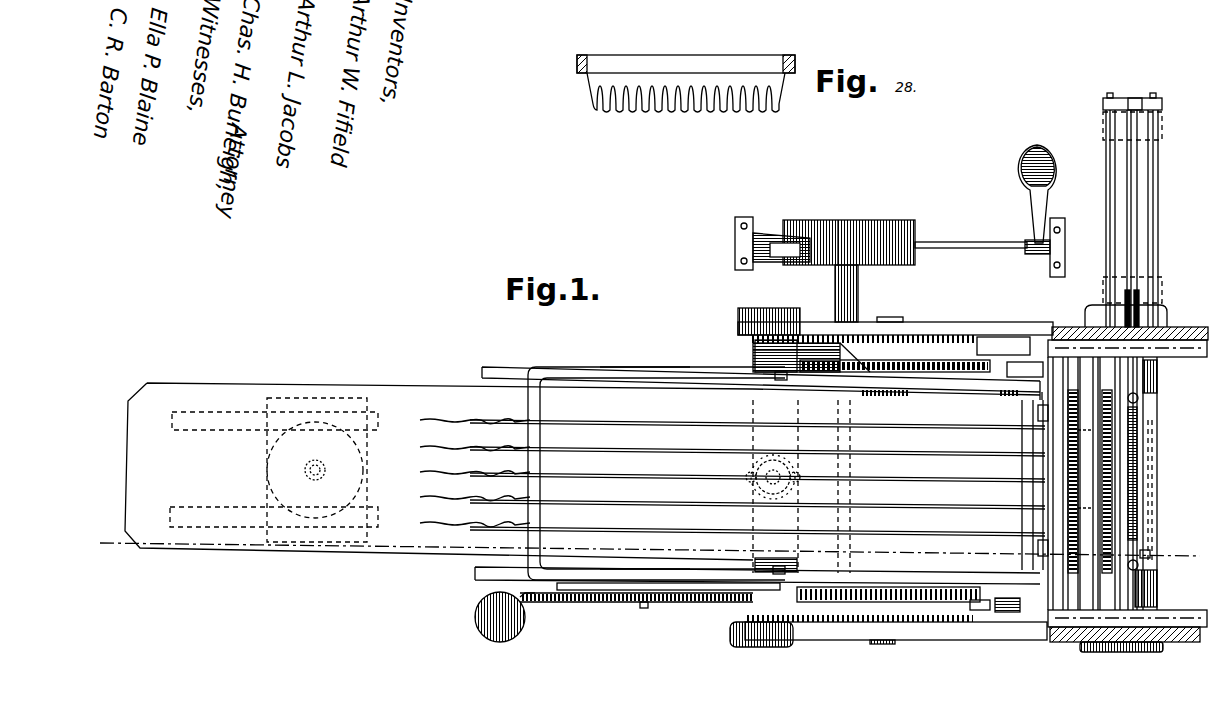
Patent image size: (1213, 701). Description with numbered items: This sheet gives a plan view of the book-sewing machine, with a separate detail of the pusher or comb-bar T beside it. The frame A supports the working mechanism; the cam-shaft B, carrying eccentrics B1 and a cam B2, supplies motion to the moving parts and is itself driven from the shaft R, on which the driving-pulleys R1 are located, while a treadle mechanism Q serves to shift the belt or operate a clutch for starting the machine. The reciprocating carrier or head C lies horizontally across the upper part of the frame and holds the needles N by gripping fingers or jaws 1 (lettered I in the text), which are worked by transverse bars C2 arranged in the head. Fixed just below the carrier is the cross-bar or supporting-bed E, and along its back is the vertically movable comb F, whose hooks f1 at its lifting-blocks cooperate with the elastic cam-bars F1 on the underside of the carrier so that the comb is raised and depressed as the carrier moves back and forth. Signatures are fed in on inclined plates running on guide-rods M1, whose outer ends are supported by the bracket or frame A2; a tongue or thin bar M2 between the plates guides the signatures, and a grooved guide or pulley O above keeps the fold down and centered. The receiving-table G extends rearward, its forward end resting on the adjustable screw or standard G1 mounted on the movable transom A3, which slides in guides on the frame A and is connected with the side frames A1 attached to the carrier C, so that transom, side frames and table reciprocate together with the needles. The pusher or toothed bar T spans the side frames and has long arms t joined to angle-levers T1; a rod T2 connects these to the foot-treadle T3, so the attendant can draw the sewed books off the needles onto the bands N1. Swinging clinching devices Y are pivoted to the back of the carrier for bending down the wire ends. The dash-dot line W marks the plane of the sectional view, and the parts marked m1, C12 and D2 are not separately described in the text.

In FIG. 1, the frame A is at (971, 483).
In FIG. 1, the side frames A1 is at (758, 467).
In FIG. 1, the bracket or frame A2 is at (1126, 201).
In FIG. 1, the movable transom A3 is at (752, 358).
In FIG. 1, the cam-shaft B is at (878, 499).
In FIG. 1, the eccentrics B1 is at (813, 357).
In FIG. 1, the cam B2 is at (888, 593).
In FIG. 1, the reciprocating carrier or head C is at (1090, 481).
In FIG. 1, the transverse bars C2 is at (1097, 388).
In FIG. 1, the carrier block C12 is at (1008, 606).
In FIG. 1, the slide block D2 is at (984, 608).
In FIG. 1, the cross-bar or supporting-bed E is at (1153, 474).
In FIG. 1, the comb or signature-holder F is at (1137, 492).
In FIG. 1, the elastic cam-bars F1 is at (1150, 398).
In FIG. 1, the hooks f1 is at (1140, 562).
In FIG. 1, the receiving-table G is at (559, 471).
In FIG. 1, the vertically-adjustable screw or standard G1 is at (773, 477).
In FIG. 1, the stop block m1 is at (1010, 356).
In FIG. 1, the guide-rods M1 is at (1101, 218).
In FIG. 1, the tongue or thin bar M2 is at (1169, 218).
In FIG. 1, the needles N is at (757, 473).
In FIG. 1, the bands N1 is at (475, 463).
In FIG. 1, the guide or pulley O is at (1145, 310).
In FIG. 1, the treadle mechanism Q is at (990, 211).
In FIG. 1, the shaft R is at (855, 293).
In FIG. 1, the driving-pulleys R1 is at (812, 228).
In FIG. 28, the pusher or toothed bar T is at (686, 74).
In FIG. 1, the pusher or toothed bar T is at (657, 473).
In FIG. 28, the long arms t is at (685, 55).
In FIG. 1, the long arms t is at (645, 466).
In FIG. 1, the angle-levers T1 is at (660, 590).
In FIG. 1, the rod T2 is at (605, 602).
In FIG. 1, the foot-treadle T3 is at (508, 617).
In FIG. 1, the section line W is at (644, 550).
In FIG. 1, the clinching devices Y is at (1037, 480).
In FIG. 1, the gripping fingers or jaws 1 is at (1085, 468).